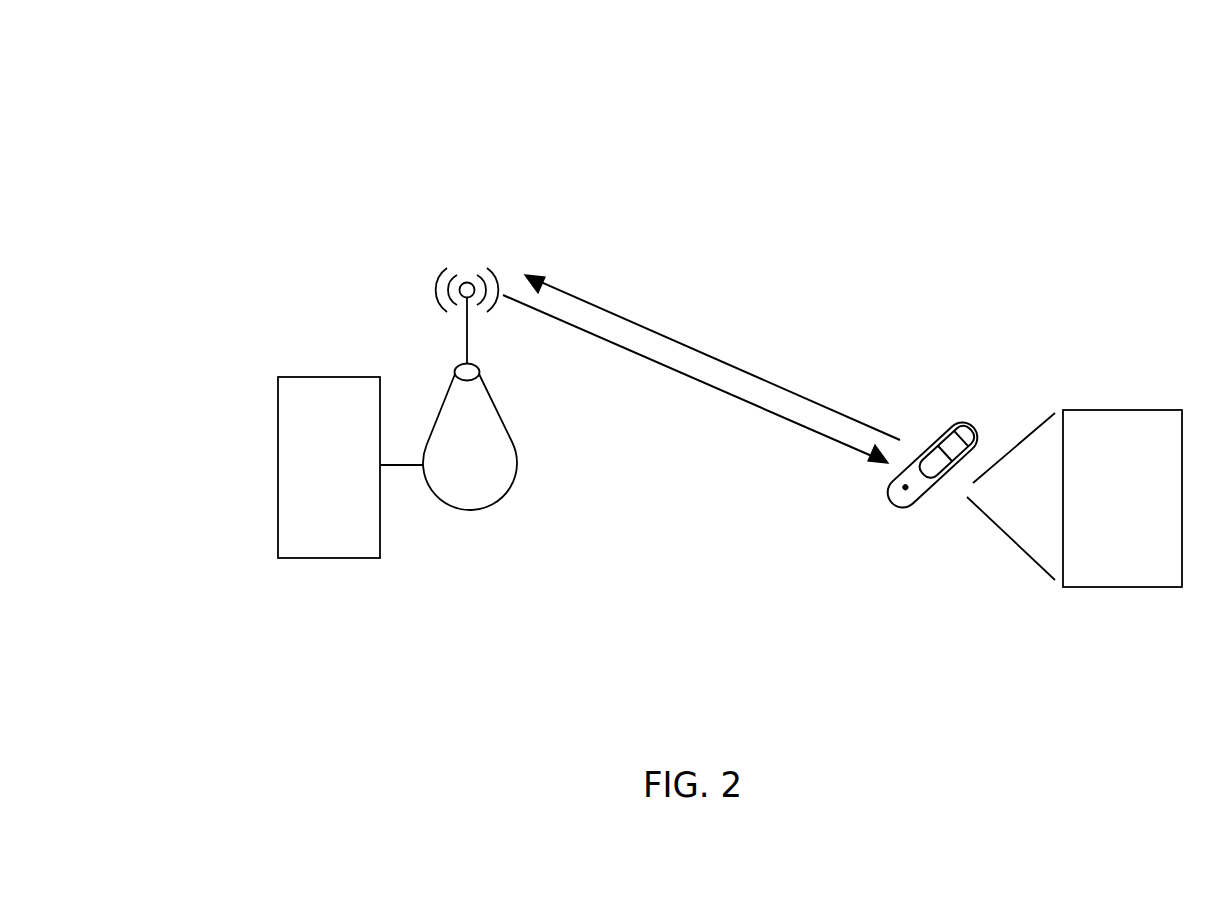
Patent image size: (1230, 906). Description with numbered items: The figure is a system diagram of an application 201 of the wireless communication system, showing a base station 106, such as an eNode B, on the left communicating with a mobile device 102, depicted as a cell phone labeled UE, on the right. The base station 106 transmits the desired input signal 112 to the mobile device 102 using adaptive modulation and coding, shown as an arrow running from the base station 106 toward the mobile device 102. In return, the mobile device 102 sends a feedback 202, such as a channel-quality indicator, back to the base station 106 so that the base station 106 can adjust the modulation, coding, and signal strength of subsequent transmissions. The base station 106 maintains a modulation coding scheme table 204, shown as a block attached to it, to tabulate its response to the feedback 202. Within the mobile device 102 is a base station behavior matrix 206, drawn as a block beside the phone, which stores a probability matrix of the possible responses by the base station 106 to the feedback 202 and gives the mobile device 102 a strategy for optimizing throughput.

The application 201 is at (243, 73).
The base station 106 is at (487, 437).
The modulation coding scheme (MCS) table 204 is at (338, 395).
The feedback 202 is at (740, 368).
The desired input signal 112 is at (692, 380).
The mobile device 102 is at (918, 488).
The base station behavior matrix (BBM) 206 is at (1098, 430).